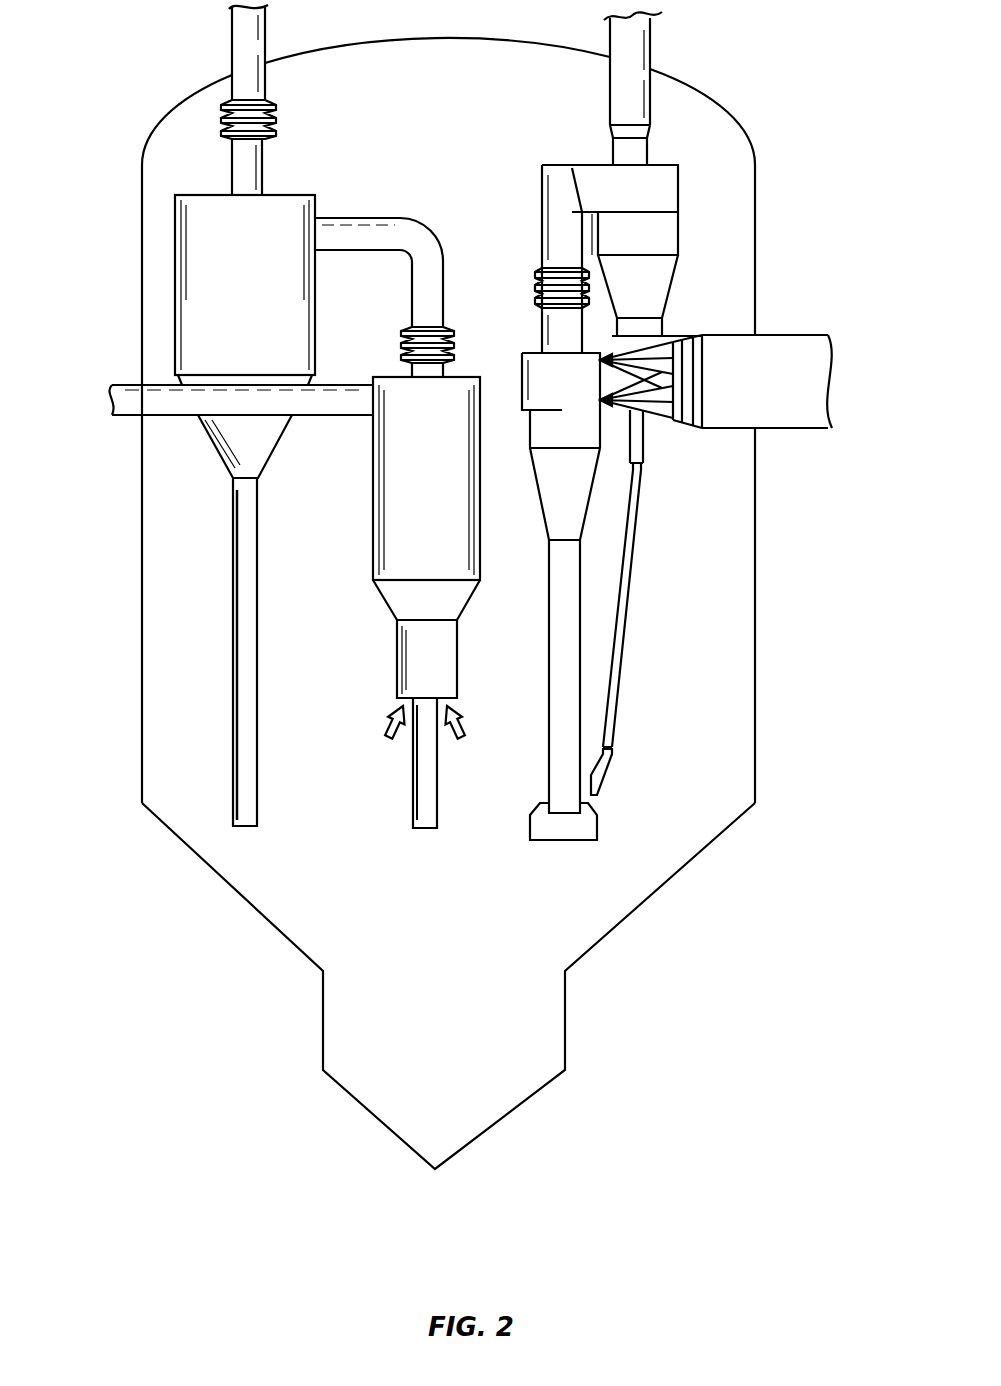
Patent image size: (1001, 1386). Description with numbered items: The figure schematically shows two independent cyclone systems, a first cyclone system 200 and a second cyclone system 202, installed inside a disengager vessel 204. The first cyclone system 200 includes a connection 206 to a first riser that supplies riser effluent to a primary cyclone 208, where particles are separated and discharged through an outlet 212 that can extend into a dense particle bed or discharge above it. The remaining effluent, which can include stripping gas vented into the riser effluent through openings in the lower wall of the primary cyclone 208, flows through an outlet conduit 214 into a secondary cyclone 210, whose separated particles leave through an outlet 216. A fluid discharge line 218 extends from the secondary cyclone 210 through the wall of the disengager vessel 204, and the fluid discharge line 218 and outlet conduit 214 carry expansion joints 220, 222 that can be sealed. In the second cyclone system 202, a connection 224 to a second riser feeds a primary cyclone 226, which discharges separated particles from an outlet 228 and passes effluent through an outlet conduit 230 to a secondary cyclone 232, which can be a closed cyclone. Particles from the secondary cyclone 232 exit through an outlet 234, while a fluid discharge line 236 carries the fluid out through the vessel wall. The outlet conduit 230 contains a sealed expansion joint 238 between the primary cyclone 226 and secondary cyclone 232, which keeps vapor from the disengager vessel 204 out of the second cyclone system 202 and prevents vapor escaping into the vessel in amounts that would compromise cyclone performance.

The first cyclone system 200 is at (153, 317).
The second cyclone system 202 is at (728, 286).
The disengager vessel 204 is at (222, 880).
The connection to a first riser 206 is at (128, 385).
The primary cyclone 208 is at (373, 535).
The secondary cyclone 210 is at (175, 268).
The outlet 212 is at (413, 786).
The outlet conduit 214 is at (430, 218).
The outlet 216 is at (235, 622).
The fluid discharge line 218 is at (232, 42).
The expansion joint 220 is at (455, 345).
The expansion joint 222 is at (278, 118).
The connection to a second riser 224 is at (780, 430).
The primary cyclone 226 is at (590, 505).
The outlet 228 is at (582, 632).
The outlet conduit 230 is at (553, 165).
The secondary cyclone 232 is at (678, 230).
The outlet 234 is at (618, 707).
The fluid discharge line 236 is at (650, 148).
The sealed expansion joint 238 is at (535, 290).